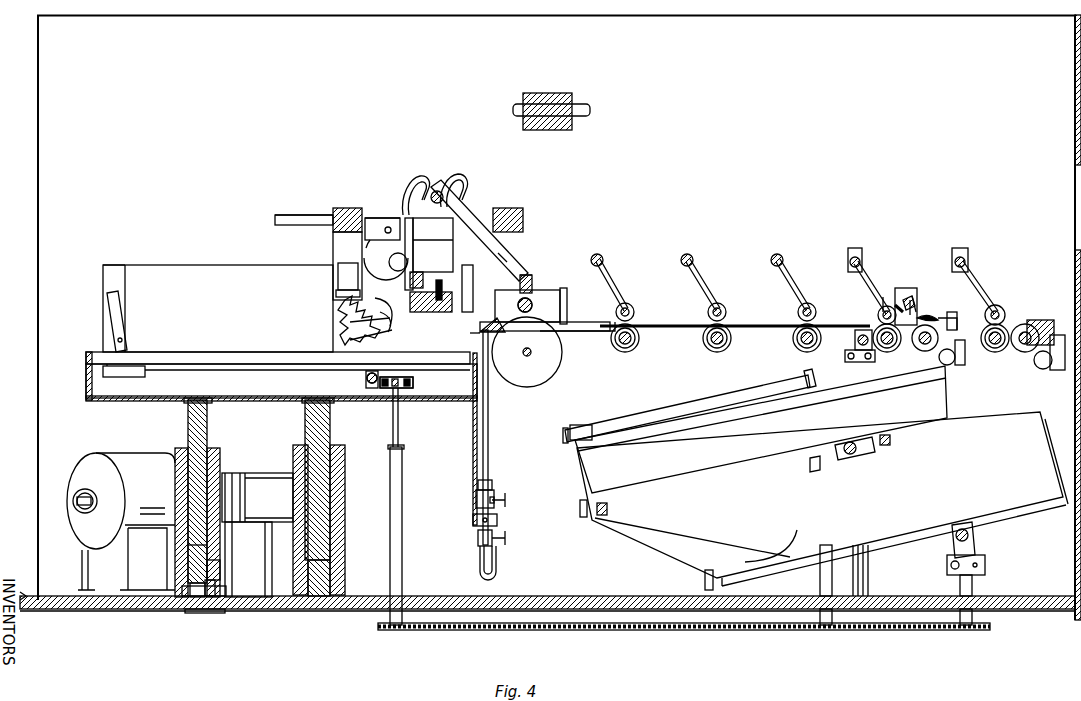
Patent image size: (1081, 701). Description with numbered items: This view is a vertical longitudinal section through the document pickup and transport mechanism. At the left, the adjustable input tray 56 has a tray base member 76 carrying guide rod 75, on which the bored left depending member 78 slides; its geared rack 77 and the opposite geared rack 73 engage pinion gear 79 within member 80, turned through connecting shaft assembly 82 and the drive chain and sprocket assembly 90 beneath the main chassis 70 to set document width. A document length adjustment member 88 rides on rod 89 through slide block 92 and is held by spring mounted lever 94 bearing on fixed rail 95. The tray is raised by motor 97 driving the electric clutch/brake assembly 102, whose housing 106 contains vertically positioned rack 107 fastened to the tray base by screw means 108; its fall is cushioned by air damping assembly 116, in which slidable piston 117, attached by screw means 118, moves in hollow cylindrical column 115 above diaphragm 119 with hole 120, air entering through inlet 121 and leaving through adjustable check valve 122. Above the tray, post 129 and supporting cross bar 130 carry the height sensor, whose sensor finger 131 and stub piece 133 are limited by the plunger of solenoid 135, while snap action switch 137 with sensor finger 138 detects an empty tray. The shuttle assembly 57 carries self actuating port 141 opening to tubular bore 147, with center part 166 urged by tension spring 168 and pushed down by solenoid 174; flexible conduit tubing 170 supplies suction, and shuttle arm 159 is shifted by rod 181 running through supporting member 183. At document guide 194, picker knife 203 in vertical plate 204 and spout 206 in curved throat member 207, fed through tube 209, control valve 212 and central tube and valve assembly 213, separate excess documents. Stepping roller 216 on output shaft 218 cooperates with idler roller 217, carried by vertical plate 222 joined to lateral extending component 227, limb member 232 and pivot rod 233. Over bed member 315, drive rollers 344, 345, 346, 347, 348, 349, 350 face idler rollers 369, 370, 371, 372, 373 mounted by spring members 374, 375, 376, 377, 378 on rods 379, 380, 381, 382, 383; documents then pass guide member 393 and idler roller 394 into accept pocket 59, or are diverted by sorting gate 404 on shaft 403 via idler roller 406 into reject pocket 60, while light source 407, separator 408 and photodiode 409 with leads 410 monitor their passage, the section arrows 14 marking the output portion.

The section line 14 is at (876, 300).
The adjustable input tray 56 is at (115, 290).
The shuttle assembly 57 is at (358, 186).
The accept pocket 59 is at (983, 512).
The reject pocket 60 is at (880, 428).
The main chassis 70 is at (62, 609).
The geared rack 73 is at (400, 388).
The rod 75 is at (372, 384).
The tray base member 76 is at (87, 398).
The geared rack 77 is at (382, 380).
The bored left depending member 78 is at (360, 363).
The pinion gear 79 is at (395, 390).
The member 80 is at (412, 388).
The connecting shaft assembly 82 is at (395, 472).
The document length adjustment member 88 is at (123, 265).
The rod 89 is at (105, 370).
The drive chain and sprocket assembly 90 is at (693, 628).
The slide block 92 is at (88, 363).
The spring mounted lever 94 is at (107, 308).
The fixed rail 95 is at (87, 352).
The motor 97 is at (78, 527).
The electric clutch/brake assembly 102 is at (273, 473).
The housing 106 is at (346, 527).
The vertically positioned rack 107 is at (322, 587).
The screw means 108 is at (318, 400).
The hollow cylindrical column 115 is at (193, 562).
The air damping assembly 116 is at (183, 517).
The slidable piston 117 is at (195, 533).
The screw means 118 is at (199, 400).
The diaphragm 119 is at (198, 600).
The hole 120 is at (213, 595).
The inlet 121 is at (200, 612).
The adjustable check valve 122 is at (215, 573).
The post 129 is at (320, 215).
The supporting cross bar 130 is at (342, 228).
The document height sensor finger 131 is at (386, 327).
The stub piece 133 is at (353, 307).
The solenoid 135 is at (352, 267).
The snap action switch 137 is at (350, 335).
The sensor finger 138 is at (352, 350).
The self actuating port 141 is at (457, 303).
The tubular bore 147 is at (402, 200).
The shuttle arm 159 is at (410, 200).
The center part 166 is at (440, 313).
The tension spring 168 is at (432, 313).
The flexible conduit tubing 170 is at (388, 237).
The solenoid 174 is at (438, 237).
The rod 181 is at (341, 241).
The supporting member 183 is at (523, 207).
The document guide 194 is at (567, 307).
The picker knife 203 is at (478, 333).
The vertical plate 204 is at (478, 490).
The adjustable spout 206 is at (482, 322).
The curved throat member 207 is at (533, 285).
The tube 209 is at (488, 426).
The control valve 212 is at (505, 499).
The central tube and valve assembly 213 is at (515, 550).
The stepping roller 216 is at (553, 358).
The idler roller 217 is at (535, 303).
The output shaft 218 is at (530, 355).
The vertical plate 222 is at (529, 302).
The lateral extending component 227 is at (525, 278).
The limb member 232 is at (503, 256).
The rod 233 is at (437, 191).
The bed member 315 is at (595, 332).
The drive roller 344 is at (629, 352).
The drive roller 345 is at (716, 352).
The drive roller 346 is at (801, 349).
The drive roller 347 is at (890, 346).
The drive roller 348 is at (925, 351).
The drive roller 349 is at (991, 350).
The drive roller 350 is at (1024, 352).
The idler roller 369 is at (634, 312).
The idler roller 370 is at (725, 310).
The idler roller 371 is at (816, 313).
The idler roller 372 is at (887, 306).
The idler roller 373 is at (998, 306).
The spring member 374 is at (605, 280).
The spring member 375 is at (698, 283).
The spring member 376 is at (795, 285).
The spring member 377 is at (857, 283).
The spring member 378 is at (977, 280).
The rod 379 is at (608, 256).
The rod 380 is at (688, 254).
The rod 381 is at (776, 254).
The rod 382 is at (854, 248).
The rod 383 is at (962, 255).
The guide member 393 is at (1045, 320).
The idler roller 394 is at (1048, 368).
The shaft 403 is at (918, 313).
The sorting gate 404 is at (921, 316).
The idler roller 406 is at (947, 365).
The light source 407 is at (893, 308).
The separator 408 is at (903, 310).
The photodiode 409 is at (915, 308).
The leads 410 is at (912, 303).